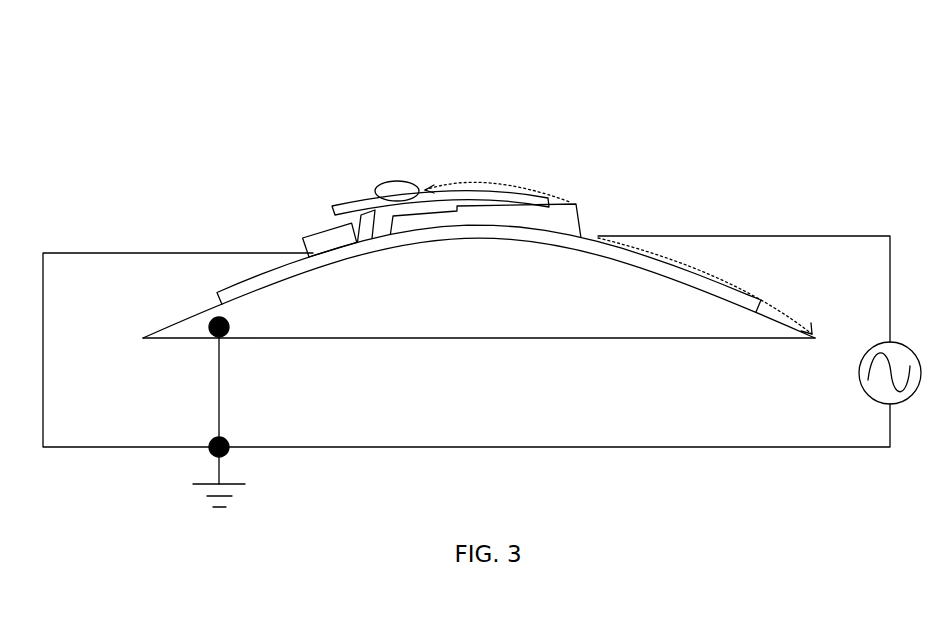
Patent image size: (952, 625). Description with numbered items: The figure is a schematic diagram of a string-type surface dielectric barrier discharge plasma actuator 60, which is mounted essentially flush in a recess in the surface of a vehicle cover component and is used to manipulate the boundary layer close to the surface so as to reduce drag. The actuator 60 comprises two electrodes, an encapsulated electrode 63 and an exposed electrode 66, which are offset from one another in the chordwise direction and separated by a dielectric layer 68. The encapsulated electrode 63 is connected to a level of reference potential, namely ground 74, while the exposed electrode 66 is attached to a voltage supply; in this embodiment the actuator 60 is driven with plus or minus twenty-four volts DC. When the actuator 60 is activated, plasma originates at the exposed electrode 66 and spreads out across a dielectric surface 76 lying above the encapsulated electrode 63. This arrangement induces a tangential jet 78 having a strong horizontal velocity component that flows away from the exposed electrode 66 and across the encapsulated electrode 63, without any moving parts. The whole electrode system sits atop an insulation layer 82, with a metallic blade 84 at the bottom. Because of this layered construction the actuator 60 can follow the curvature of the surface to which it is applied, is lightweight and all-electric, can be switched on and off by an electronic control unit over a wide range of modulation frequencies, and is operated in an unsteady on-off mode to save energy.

The string-type surface dielectric barrier discharge plasma actuator 60 is at (644, 340).
The encapsulated electrode 63 is at (343, 203).
The exposed electrode 66 is at (600, 236).
The dielectric layer 68 is at (533, 207).
The ground 74 is at (235, 484).
The dielectric surface 76 is at (397, 178).
The tangential jet 78 is at (493, 183).
The insulation layer 82 is at (252, 277).
The metallic blade 84 is at (192, 330).